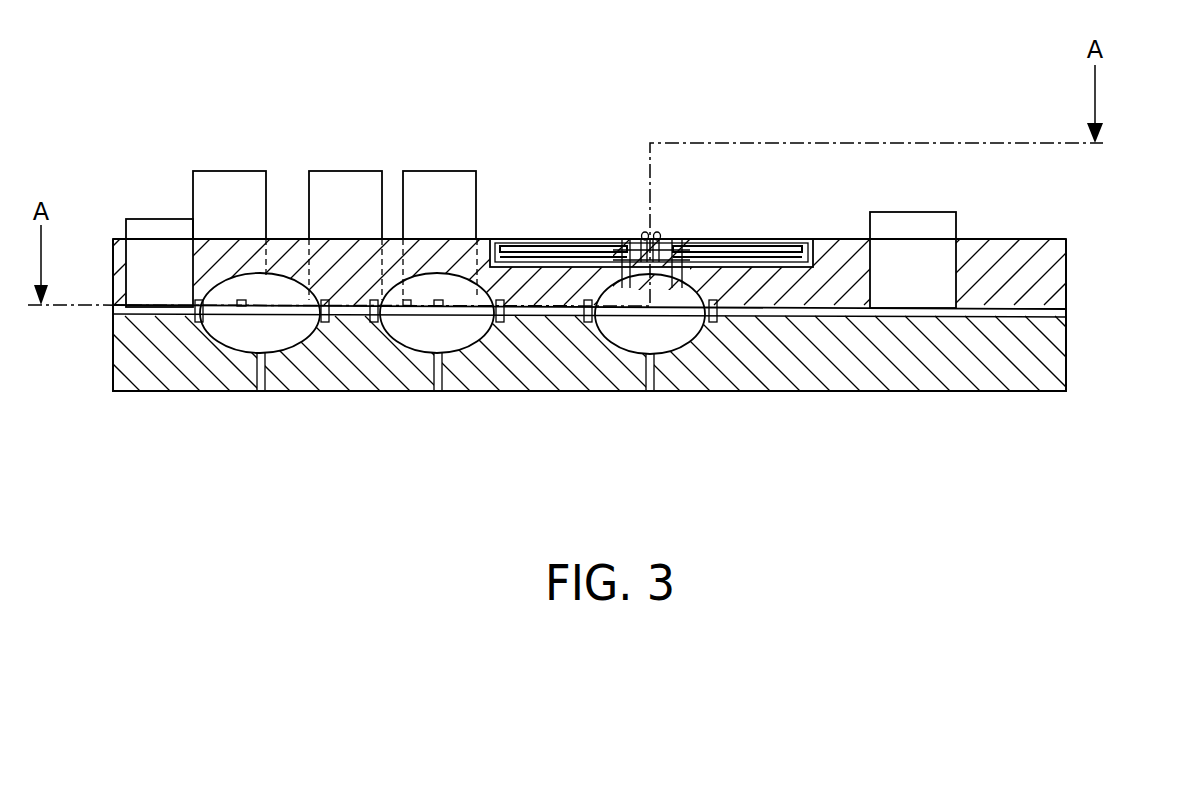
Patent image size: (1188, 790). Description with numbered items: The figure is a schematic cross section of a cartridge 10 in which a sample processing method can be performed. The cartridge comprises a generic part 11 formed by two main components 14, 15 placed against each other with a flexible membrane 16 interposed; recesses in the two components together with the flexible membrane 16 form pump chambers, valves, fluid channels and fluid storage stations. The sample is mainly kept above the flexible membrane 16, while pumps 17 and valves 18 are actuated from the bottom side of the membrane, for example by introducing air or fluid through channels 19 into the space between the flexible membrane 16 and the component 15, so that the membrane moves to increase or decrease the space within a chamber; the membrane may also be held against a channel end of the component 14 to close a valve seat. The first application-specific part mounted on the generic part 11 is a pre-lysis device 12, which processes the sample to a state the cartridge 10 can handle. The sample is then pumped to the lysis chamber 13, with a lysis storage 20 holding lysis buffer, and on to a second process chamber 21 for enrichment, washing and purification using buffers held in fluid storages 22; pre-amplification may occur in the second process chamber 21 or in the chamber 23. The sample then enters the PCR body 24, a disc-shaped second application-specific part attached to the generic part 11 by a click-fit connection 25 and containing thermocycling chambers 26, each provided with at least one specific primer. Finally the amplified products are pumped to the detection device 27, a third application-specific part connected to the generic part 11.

The cartridge 10 is at (936, 464).
The generic part 11 is at (144, 373).
The pre-lysis device 12 is at (162, 235).
The lysis chamber 13 is at (272, 288).
The main component 14 is at (1045, 277).
The main component 15 is at (1045, 362).
The flexible membrane 16 is at (1047, 313).
The pump 17 is at (250, 326).
The valve 18 is at (200, 324).
The channel 19 is at (262, 391).
The lysis storage 20 is at (230, 180).
The second process chamber 21 is at (470, 285).
The fluid storage 22 is at (348, 180).
The chamber 23 is at (636, 290).
The PCR body 24 is at (803, 242).
The click-fit connection 25 is at (657, 238).
The thermocycling chamber 26 is at (570, 247).
The detection device 27 is at (918, 235).